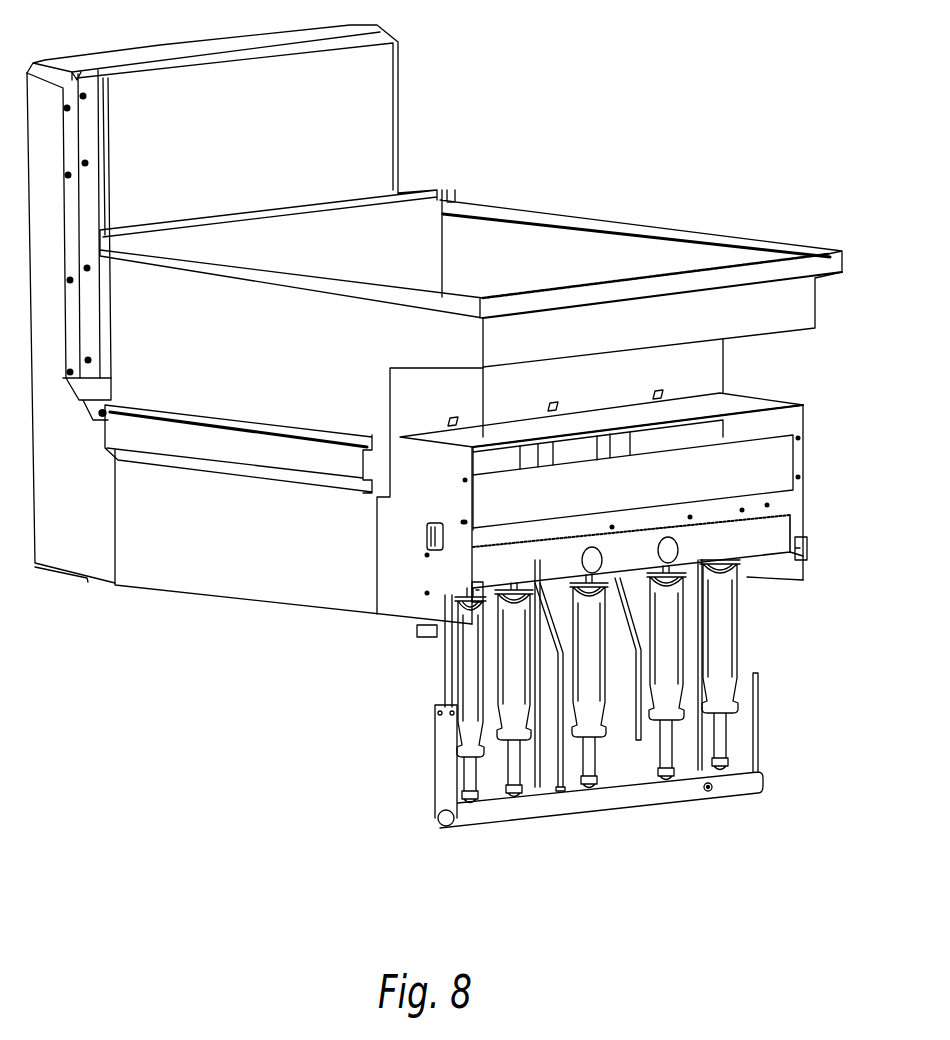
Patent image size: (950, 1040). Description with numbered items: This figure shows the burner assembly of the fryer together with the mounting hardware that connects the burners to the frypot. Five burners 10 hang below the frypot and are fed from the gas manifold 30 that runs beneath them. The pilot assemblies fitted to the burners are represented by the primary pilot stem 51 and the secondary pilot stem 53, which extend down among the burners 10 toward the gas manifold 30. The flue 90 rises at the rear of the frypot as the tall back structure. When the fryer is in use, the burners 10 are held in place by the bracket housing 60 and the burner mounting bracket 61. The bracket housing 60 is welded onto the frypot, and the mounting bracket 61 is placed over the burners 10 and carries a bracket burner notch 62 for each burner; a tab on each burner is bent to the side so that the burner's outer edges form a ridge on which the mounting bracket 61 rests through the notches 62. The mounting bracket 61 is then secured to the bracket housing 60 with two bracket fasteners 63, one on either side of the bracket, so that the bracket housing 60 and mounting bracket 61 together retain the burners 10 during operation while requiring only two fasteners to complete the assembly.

The burner 10 is at (735, 643).
The gas manifold 30 is at (763, 772).
The primary pilot stem 51 is at (643, 758).
The secondary pilot stem 53 is at (568, 772).
The bracket housing 60 is at (408, 575).
The burner mounting bracket 61 is at (760, 450).
The bracket burner notch 62 is at (487, 613).
The bracket fastener 63 is at (773, 505).
The flue 90 is at (400, 97).